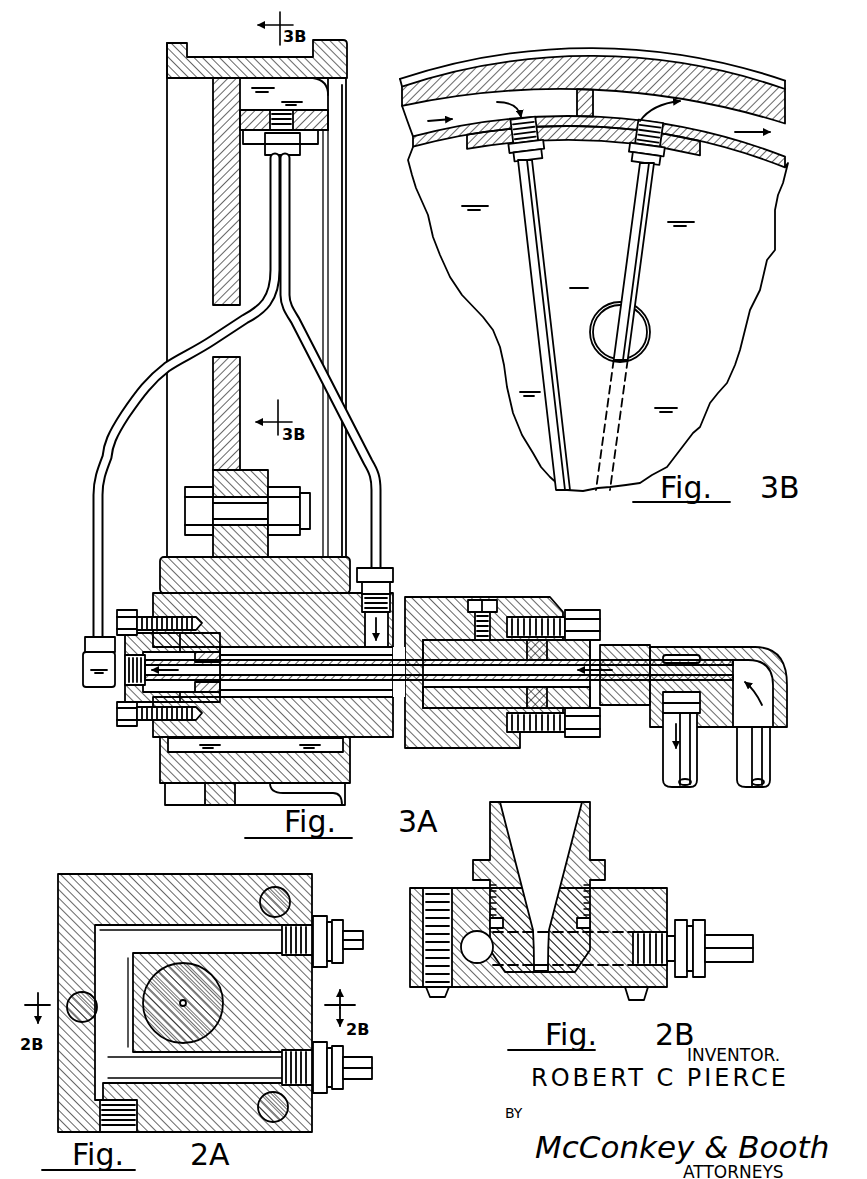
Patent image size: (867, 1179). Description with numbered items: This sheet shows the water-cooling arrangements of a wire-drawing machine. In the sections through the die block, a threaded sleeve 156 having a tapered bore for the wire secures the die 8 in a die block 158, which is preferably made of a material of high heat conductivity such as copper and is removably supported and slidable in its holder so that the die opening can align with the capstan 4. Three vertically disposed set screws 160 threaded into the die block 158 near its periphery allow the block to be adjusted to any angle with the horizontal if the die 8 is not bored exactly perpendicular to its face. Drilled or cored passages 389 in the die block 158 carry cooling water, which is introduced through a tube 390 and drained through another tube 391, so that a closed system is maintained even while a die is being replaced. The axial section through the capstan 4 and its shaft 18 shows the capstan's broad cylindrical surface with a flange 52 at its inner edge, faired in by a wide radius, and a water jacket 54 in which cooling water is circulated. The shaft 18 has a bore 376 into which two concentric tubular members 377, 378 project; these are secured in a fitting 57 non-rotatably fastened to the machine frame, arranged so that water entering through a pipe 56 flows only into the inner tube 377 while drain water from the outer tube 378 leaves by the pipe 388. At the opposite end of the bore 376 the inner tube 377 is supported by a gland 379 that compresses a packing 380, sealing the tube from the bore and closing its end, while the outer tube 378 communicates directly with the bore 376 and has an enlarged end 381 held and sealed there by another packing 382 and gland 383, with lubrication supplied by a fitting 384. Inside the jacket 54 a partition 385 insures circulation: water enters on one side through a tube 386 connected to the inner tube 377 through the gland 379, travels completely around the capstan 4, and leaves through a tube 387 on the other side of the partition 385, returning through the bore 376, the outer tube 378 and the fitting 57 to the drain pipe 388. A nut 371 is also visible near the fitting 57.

In FIG. 3A, the capstan 4 is at (188, 221).
In FIG. 3B, the capstan 4 is at (486, 270).
In FIG. 2A, the die 8 is at (205, 990).
In FIG. 2B, the die 8 is at (522, 965).
In FIG. 3A, the shaft 18 is at (428, 597).
In FIG. 3A, the flange 52 is at (343, 45).
In FIG. 3A, the water jacket 54 is at (322, 112).
In FIG. 3B, the water jacket 54 is at (555, 92).
In FIG. 3A, the pipe 56 is at (746, 760).
In FIG. 3A, the fitting 57 is at (726, 650).
In FIG. 2B, the threaded sleeve 156 is at (580, 847).
In FIG. 2A, the die block 158 is at (80, 890).
In FIG. 2B, the die block 158 is at (627, 903).
In FIG. 2A, the set screws 160 is at (270, 893).
In FIG. 2B, the set screws 160 is at (429, 990).
In FIG. 3A, the nut 371 is at (675, 660).
In FIG. 3A, the bore 376 is at (362, 692).
In FIG. 3A, the tubular member 377 is at (325, 688).
In FIG. 3A, the tubular member 378 is at (600, 626).
In FIG. 3A, the gland 379 is at (135, 690).
In FIG. 3A, the packing 380 is at (156, 727).
In FIG. 3A, the enlarged end 381 is at (433, 645).
In FIG. 3A, the packing 382 is at (538, 640).
In FIG. 3A, the gland 383 is at (560, 628).
In FIG. 3A, the fitting 384 is at (484, 602).
In FIG. 3A, the partition 385 is at (310, 127).
In FIG. 3B, the partition 385 is at (588, 122).
In FIG. 3A, the tube 386 is at (140, 402).
In FIG. 3B, the tube 386 is at (636, 183).
In FIG. 3A, the tube 387 is at (340, 370).
In FIG. 3B, the tube 387 is at (541, 278).
In FIG. 3A, the pipe 388 is at (670, 755).
In FIG. 2A, the passages 389 is at (165, 937).
In FIG. 2B, the passages 389 is at (477, 963).
In FIG. 2A, the tube 390 is at (346, 934).
In FIG. 2B, the tube 390 is at (726, 957).
In FIG. 2A, the tube 391 is at (346, 1072).